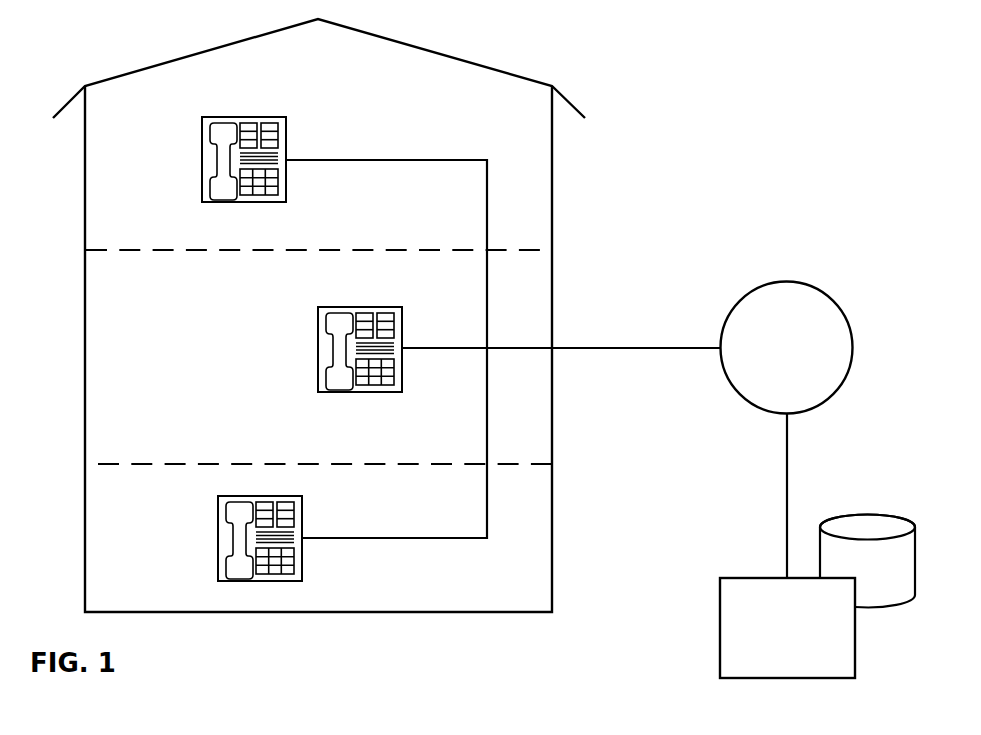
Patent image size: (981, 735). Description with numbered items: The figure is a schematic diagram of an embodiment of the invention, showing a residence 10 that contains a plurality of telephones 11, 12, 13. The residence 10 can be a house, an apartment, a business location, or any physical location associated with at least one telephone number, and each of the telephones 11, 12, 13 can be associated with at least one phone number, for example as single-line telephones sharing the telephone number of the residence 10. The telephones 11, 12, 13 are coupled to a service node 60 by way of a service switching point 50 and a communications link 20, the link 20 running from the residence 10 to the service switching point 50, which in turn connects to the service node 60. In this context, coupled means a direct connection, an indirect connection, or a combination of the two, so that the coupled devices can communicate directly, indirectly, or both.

The residence 10 is at (187, 57).
The telephone 11 is at (201, 160).
The telephone 12 is at (317, 347).
The telephone 13 is at (217, 537).
The communications link 20 is at (642, 347).
The service switching point 50 is at (786, 282).
The service node 60 is at (735, 578).